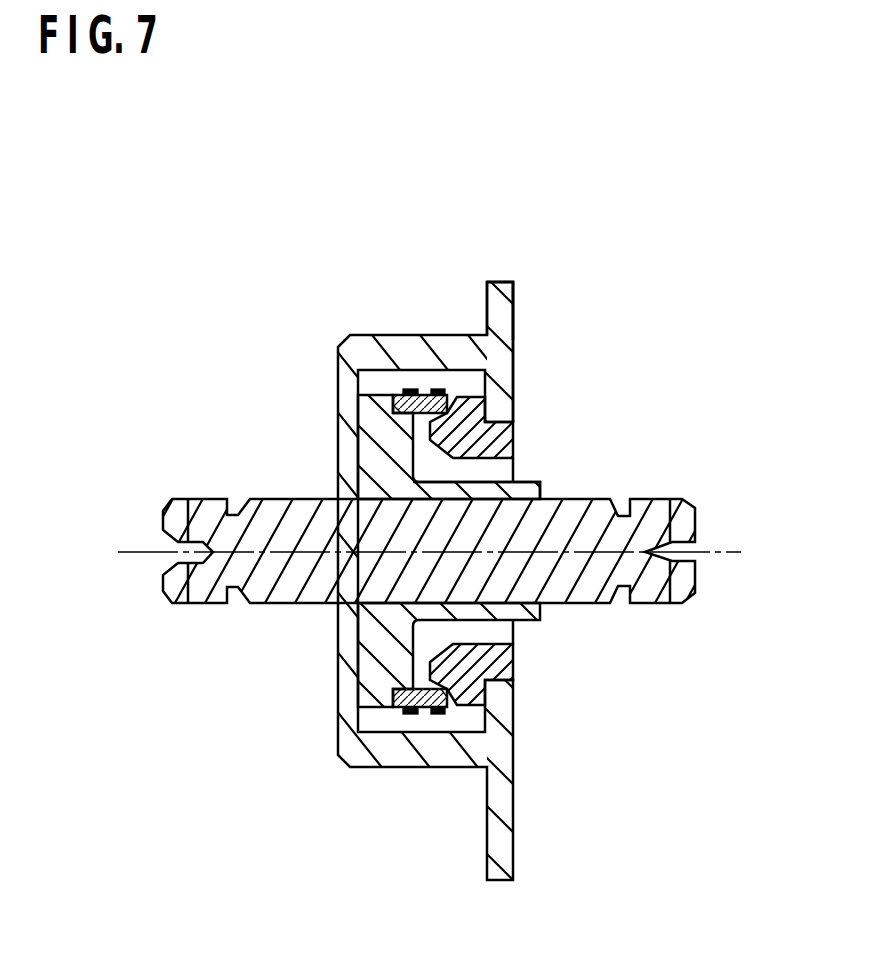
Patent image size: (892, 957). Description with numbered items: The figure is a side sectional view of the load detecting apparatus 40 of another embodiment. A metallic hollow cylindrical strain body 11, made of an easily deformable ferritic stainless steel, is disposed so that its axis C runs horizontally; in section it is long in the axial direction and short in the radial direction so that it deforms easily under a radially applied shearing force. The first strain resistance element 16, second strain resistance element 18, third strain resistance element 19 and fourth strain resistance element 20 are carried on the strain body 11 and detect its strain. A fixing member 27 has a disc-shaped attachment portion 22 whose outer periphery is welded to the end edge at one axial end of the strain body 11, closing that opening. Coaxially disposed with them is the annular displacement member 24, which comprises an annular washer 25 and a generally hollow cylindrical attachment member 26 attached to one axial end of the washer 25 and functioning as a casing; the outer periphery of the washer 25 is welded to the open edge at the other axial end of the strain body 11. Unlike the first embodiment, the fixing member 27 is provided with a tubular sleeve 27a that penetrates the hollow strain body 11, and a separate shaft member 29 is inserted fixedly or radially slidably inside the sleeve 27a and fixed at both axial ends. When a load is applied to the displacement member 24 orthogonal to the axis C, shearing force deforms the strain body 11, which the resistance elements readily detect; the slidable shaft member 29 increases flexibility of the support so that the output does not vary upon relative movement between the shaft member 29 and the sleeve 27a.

The strain body 11 is at (420, 400).
The first strain resistance element 16 is at (433, 712).
The second strain resistance element 18 is at (403, 713).
The third strain resistance element 19 is at (434, 393).
The fourth strain resistance element 20 is at (405, 392).
The attachment portion 22 is at (367, 667).
The displacement member 24 is at (525, 323).
The washer 25 is at (483, 443).
The attachment member 26 is at (498, 300).
The fixing member 27 is at (352, 452).
The sleeve 27a is at (513, 492).
The shaft member 29 is at (537, 560).
The load detecting apparatus 40 is at (658, 278).
The axis C is at (722, 551).